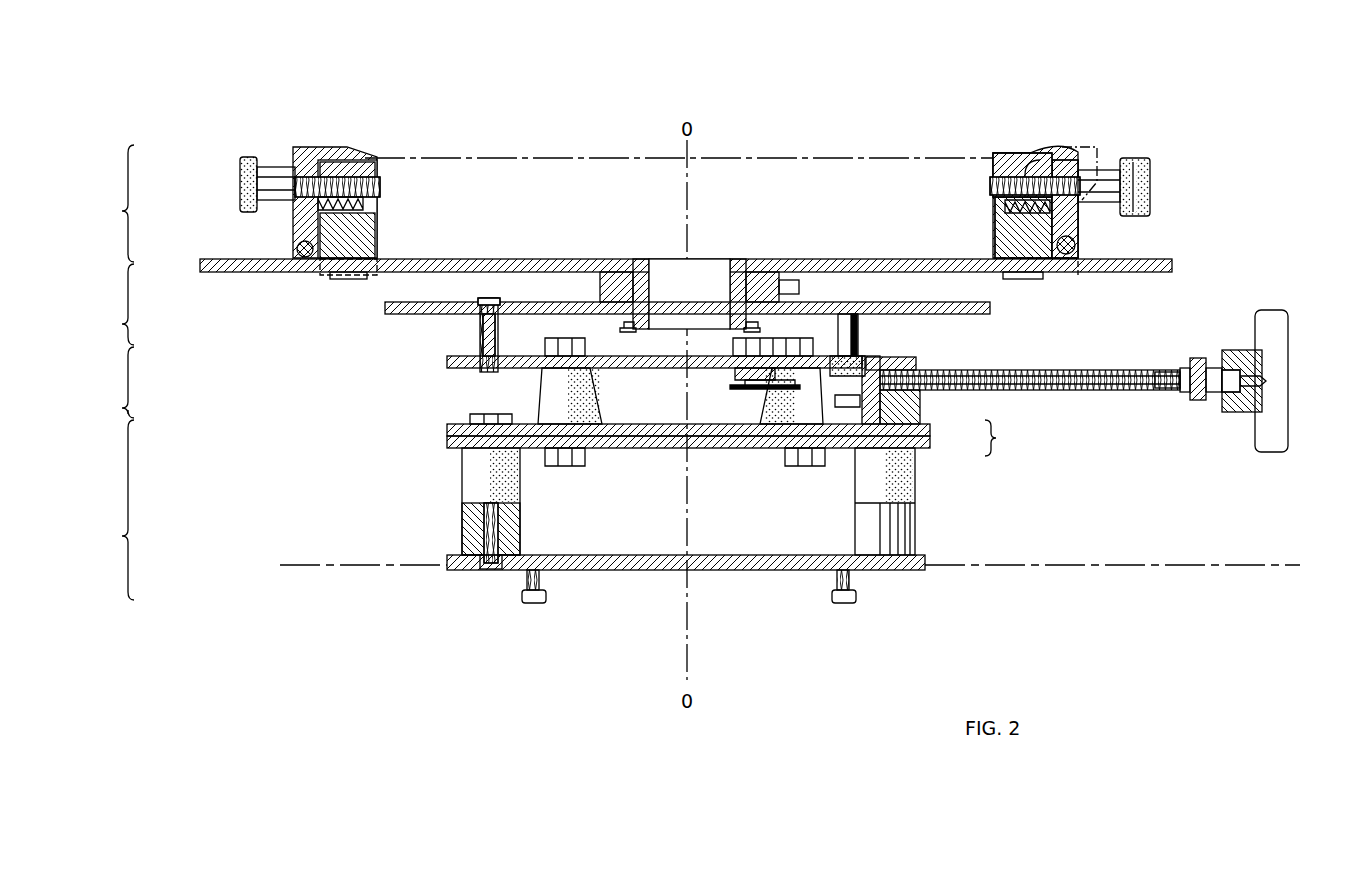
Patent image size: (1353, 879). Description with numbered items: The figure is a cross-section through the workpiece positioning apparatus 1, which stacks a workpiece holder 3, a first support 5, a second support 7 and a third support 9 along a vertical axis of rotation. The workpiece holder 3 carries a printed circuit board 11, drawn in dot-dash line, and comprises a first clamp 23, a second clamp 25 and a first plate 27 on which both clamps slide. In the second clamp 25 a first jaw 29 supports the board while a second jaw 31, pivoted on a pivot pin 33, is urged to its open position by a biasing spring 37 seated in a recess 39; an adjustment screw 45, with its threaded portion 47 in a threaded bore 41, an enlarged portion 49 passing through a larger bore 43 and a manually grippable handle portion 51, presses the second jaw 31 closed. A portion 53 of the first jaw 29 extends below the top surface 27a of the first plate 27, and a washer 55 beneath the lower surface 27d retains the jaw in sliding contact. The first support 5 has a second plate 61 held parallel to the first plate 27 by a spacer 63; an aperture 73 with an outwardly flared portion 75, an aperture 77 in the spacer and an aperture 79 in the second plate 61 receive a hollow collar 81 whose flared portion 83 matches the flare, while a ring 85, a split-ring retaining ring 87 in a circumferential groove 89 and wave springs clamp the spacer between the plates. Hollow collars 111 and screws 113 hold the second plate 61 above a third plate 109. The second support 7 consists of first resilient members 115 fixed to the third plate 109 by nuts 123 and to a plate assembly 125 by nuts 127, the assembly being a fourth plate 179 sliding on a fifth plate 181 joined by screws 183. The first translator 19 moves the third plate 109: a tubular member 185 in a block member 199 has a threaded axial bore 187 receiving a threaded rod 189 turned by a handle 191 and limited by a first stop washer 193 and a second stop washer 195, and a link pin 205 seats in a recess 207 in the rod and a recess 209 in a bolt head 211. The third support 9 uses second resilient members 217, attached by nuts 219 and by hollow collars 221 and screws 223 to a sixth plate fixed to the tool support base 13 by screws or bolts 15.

The workpiece positioning apparatus 1 is at (1272, 95).
The workpiece holder 3 is at (119, 203).
The first support 5 is at (119, 304).
The second support 7 is at (119, 384).
The third support 9 is at (119, 510).
The printed circuit board 11 is at (840, 162).
The base of a tool support 13 is at (1075, 566).
The screws or bolts 15 is at (544, 596).
The first translator 19 is at (1065, 430).
The first clamp 23 is at (330, 130).
The second clamp 25 is at (1045, 128).
The first plate 27 is at (1173, 264).
The top surface of first plate 27a is at (913, 259).
The lower surface of first plate 27d is at (844, 259).
The first jaw 29 is at (993, 219).
The second jaw 31 is at (1010, 160).
The pivot pin 33 is at (1074, 243).
The biasing spring 37 is at (995, 236).
The recess 39 is at (995, 182).
The threaded bore 41 is at (1008, 155).
The bore 43 is at (1070, 157).
The adjustment screw 45 is at (1148, 192).
The threaded portion 47 is at (1032, 150).
The enlarged portion 49 is at (1120, 165).
The manually grippable handle portion 51 is at (1140, 156).
The portion of the first jaw 53 is at (1052, 276).
The washer 55 is at (1007, 283).
The second plate 61 is at (990, 314).
The spacer 63 is at (800, 286).
The aperture 73 is at (756, 267).
The outwardly flared portion 75 is at (740, 263).
The aperture 77 is at (737, 259).
The aperture 79 is at (689, 280).
The collar 81 is at (650, 262).
The flared portion 83 is at (620, 264).
The ring 85 is at (758, 326).
The split-ring retaining ring 87 is at (630, 333).
The circumferential groove 89 is at (628, 330).
The third plate 109 is at (454, 357).
The hollow collars 111 is at (479, 337).
The screws 113 is at (487, 305).
The first resilient members 115 is at (596, 405).
The nuts 123 is at (548, 353).
The plate assembly 125 is at (1015, 438).
The nuts 127 is at (562, 470).
The fourth plate 179 is at (933, 426).
The fifth plate 181 is at (932, 445).
The screws 183 is at (848, 382).
The tubular member 185 is at (1058, 368).
The threaded axial bore 187 is at (988, 370).
The threaded rod 189 is at (1190, 365).
The manually grippable handle 191 is at (1290, 332).
The first stop washer 193 is at (1203, 400).
The second stop washer 195 is at (880, 358).
The block member 199 is at (912, 407).
The link pin 205 is at (774, 438).
The recess 207 is at (855, 358).
The recess 209 is at (753, 375).
The bolt head 211 is at (734, 365).
The second resilient members 217 is at (450, 467).
The nuts 219 is at (460, 422).
The hollow collars 221 is at (521, 522).
The screws 223 is at (492, 574).